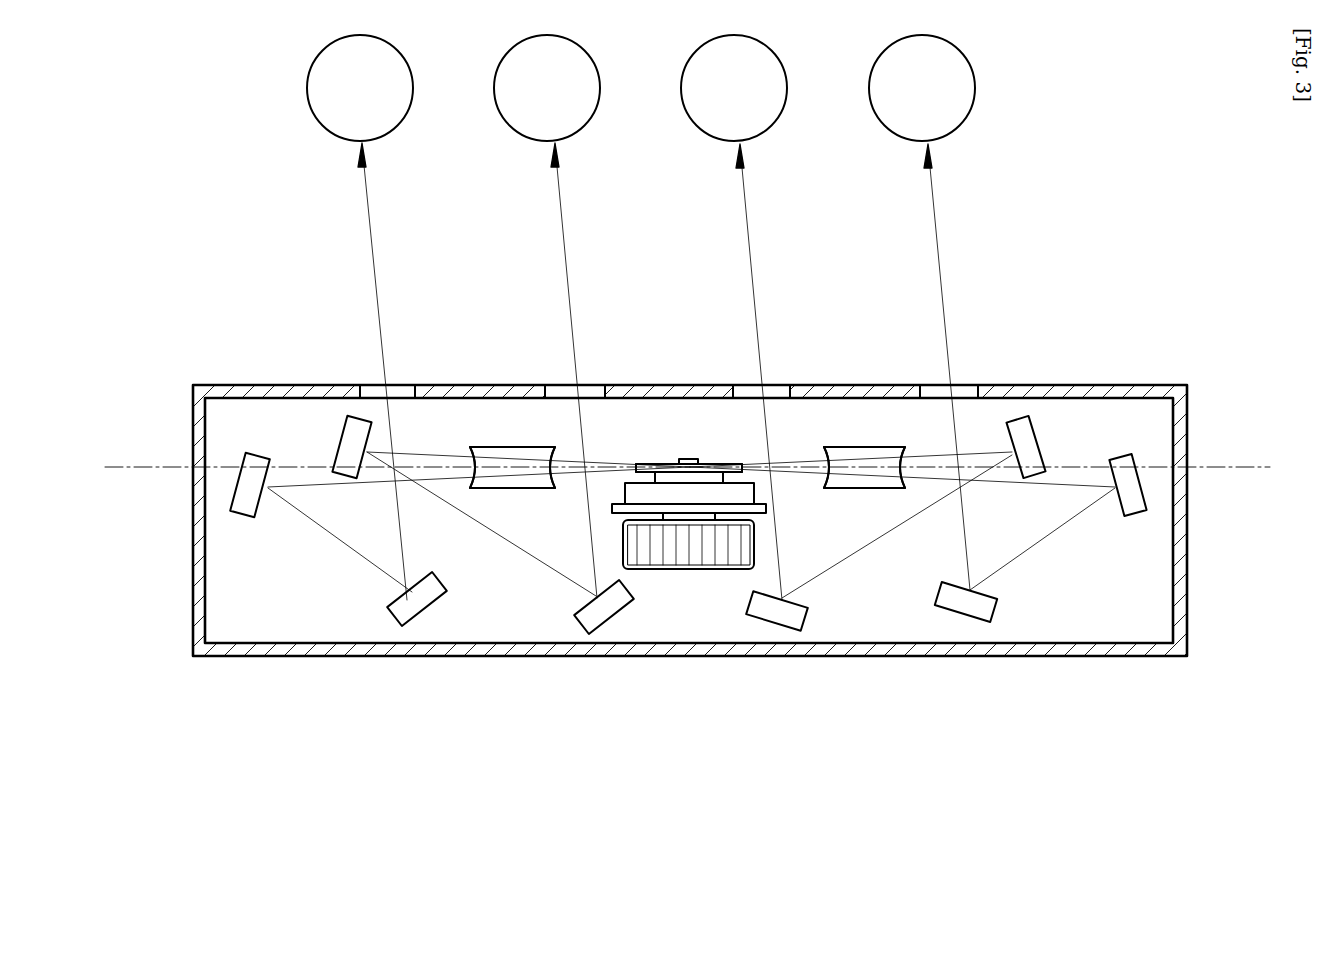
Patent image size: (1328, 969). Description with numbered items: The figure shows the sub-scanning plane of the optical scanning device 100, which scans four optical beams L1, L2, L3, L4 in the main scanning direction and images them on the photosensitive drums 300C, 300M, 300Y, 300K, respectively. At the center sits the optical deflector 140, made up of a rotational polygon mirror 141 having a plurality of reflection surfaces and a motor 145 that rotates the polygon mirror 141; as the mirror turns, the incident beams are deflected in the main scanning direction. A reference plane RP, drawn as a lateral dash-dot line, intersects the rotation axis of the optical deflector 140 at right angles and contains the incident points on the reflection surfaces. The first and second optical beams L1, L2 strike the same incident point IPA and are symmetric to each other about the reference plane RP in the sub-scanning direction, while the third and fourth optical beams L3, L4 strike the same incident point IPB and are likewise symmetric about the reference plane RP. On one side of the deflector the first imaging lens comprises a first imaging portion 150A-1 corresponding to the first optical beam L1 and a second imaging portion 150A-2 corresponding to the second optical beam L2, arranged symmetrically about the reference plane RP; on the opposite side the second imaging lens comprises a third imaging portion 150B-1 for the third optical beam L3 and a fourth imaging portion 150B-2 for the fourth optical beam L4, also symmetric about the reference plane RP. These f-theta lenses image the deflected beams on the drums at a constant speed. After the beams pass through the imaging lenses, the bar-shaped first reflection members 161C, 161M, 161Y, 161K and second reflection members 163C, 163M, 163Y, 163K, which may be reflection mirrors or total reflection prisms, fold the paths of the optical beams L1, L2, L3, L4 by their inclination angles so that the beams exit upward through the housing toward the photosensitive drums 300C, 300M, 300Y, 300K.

The optical scanning device 100 is at (1188, 354).
The reference plane RP is at (113, 466).
The first optical beam L1 is at (939, 260).
The second optical beam L2 is at (751, 260).
The third optical beam L3 is at (565, 252).
The fourth optical beam L4 is at (372, 242).
The photosensitive drum 300K is at (392, 121).
The photosensitive drum 300Y is at (579, 121).
The photosensitive drum 300M is at (766, 121).
The photosensitive drum 300C is at (954, 121).
The optical deflector 140 is at (689, 537).
The rotational polygon mirror 141 is at (675, 464).
The motor 145 is at (668, 560).
The first imaging portion 150A-1 is at (843, 480).
The second imaging portion 150A-2 is at (873, 450).
The third imaging portion 150B-1 is at (523, 450).
The fourth imaging portion 150B-2 is at (482, 485).
The first reflection member 161K is at (243, 488).
The first reflection member 161Y is at (352, 428).
The first reflection member 161M is at (1028, 427).
The first reflection member 161C is at (1133, 488).
The second reflection member 163K is at (413, 605).
The second reflection member 163Y is at (592, 618).
The second reflection member 163M is at (787, 618).
The second reflection member 163C is at (978, 612).
The incident point IPA is at (635, 465).
The incident point IPB is at (743, 467).